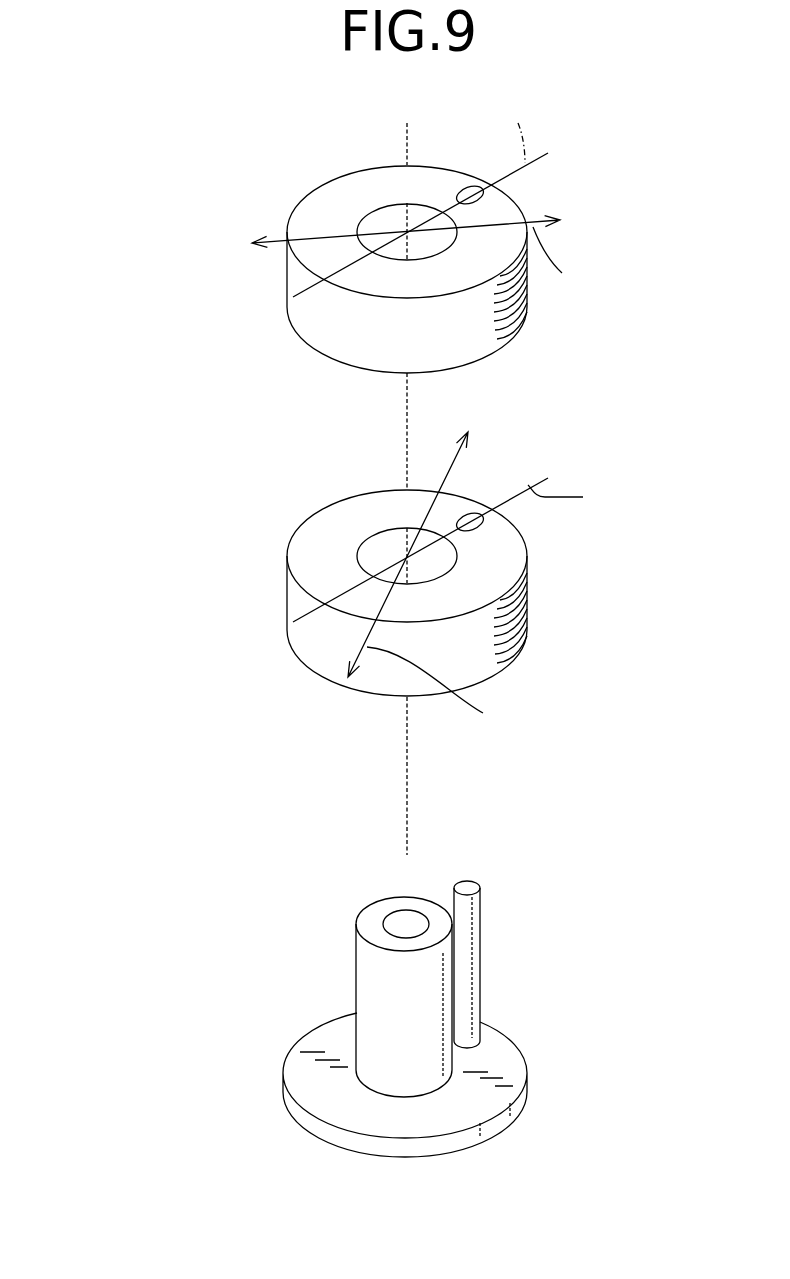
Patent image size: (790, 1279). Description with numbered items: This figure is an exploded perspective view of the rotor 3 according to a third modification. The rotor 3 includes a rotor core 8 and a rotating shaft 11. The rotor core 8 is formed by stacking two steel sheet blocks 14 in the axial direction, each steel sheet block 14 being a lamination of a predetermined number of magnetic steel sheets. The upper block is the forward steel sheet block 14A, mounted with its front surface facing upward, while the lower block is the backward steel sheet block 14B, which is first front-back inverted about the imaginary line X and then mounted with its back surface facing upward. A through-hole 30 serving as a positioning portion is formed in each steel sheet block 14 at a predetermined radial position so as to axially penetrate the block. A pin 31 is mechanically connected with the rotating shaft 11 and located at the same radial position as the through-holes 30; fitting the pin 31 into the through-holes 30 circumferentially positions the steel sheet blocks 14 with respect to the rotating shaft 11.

The rotor 3 is at (578, 452).
The rotor core 8 is at (110, 328).
The steel sheet block 14 is at (394, 427).
The forward steel sheet block 14A is at (300, 318).
The backward steel sheet block 14B is at (300, 603).
The through-hole 30 is at (483, 204).
The rotating shaft 11 is at (367, 965).
The pin 31 is at (467, 973).